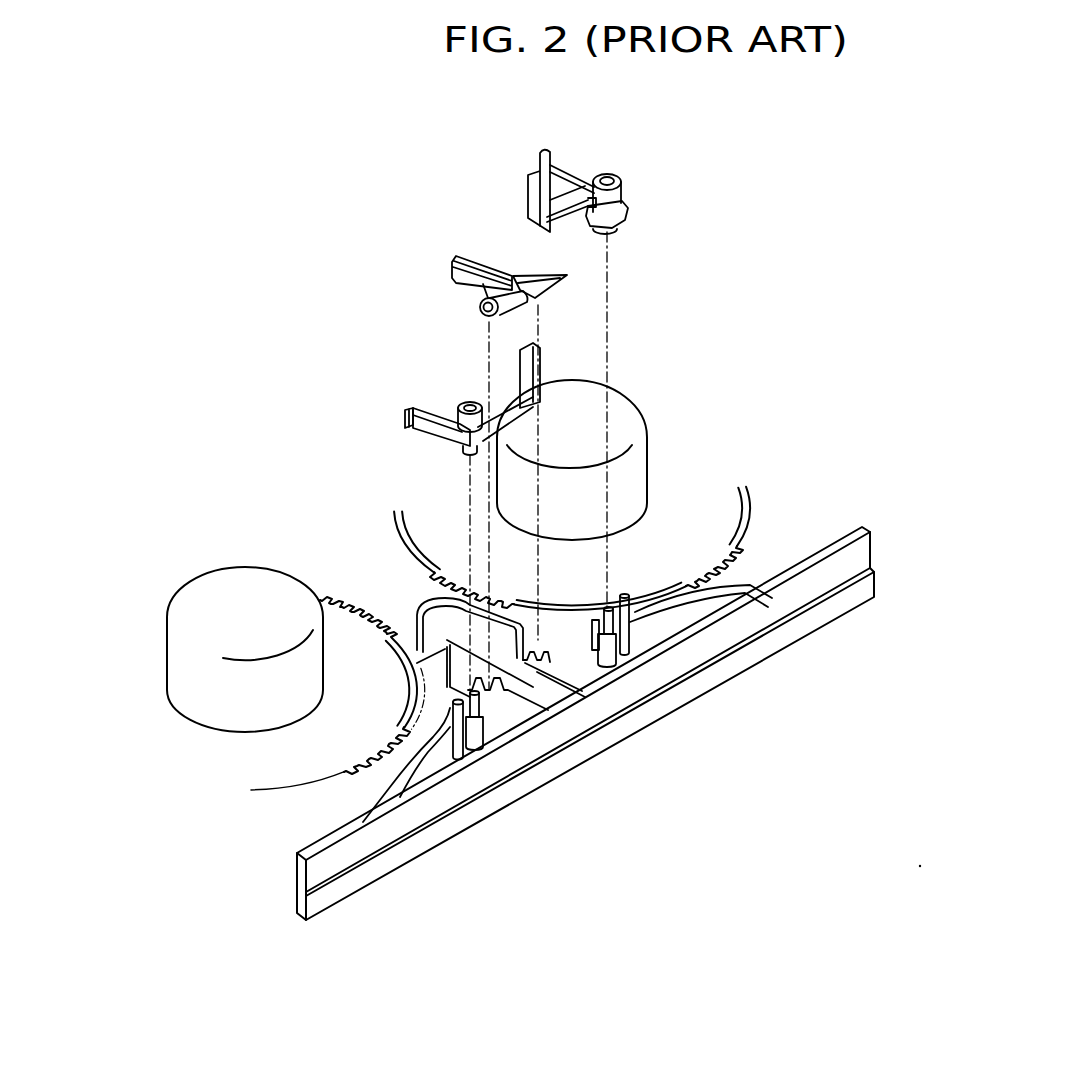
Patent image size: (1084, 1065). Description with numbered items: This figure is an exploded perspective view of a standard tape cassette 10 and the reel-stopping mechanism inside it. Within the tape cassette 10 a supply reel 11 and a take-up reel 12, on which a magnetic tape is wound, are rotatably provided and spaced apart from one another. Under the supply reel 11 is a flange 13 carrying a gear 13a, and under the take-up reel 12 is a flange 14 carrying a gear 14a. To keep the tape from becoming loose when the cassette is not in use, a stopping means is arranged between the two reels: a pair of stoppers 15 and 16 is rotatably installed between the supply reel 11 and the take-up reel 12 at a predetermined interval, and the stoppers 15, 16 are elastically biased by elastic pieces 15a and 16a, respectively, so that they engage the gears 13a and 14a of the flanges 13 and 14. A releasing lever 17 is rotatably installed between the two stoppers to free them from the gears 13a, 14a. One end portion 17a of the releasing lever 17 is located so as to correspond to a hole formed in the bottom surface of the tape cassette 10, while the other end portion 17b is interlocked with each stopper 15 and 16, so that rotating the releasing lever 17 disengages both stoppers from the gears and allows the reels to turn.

The tape cassette 10 is at (766, 714).
The supply reel 11 is at (200, 558).
The take-up reel 12 is at (671, 448).
The flange 13 is at (250, 742).
The gear 13a is at (343, 772).
The flange 14 is at (729, 518).
The gear 14a is at (742, 550).
The stopper 15 is at (459, 377).
The elastic piece 15a is at (408, 409).
The stopper 16 is at (642, 198).
The elastic piece 16a is at (628, 218).
The releasing lever 17 is at (461, 296).
The one end portion 17a is at (480, 253).
The other end portion 17b is at (557, 280).